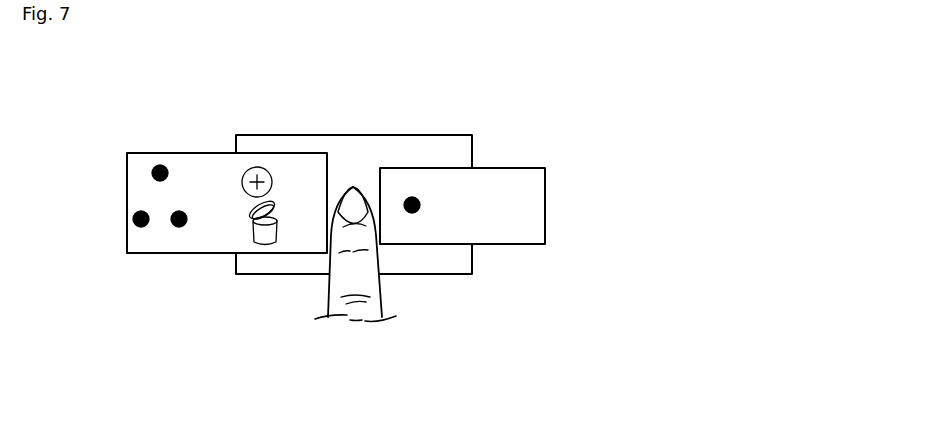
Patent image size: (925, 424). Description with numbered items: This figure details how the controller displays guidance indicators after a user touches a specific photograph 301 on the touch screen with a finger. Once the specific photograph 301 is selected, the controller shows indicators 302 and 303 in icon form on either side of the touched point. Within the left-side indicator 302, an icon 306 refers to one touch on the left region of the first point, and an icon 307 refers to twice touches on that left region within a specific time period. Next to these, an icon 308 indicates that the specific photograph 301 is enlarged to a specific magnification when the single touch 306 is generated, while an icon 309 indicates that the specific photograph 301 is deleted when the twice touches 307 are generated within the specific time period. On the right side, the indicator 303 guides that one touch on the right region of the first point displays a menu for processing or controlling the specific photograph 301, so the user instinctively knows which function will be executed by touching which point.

The specific photograph 301 is at (355, 134).
The indicator 302 is at (127, 201).
The indicator 303 is at (545, 205).
The icon 306 is at (160, 165).
The icon 307 is at (163, 222).
The icon 308 is at (258, 166).
The icon 309 is at (265, 240).